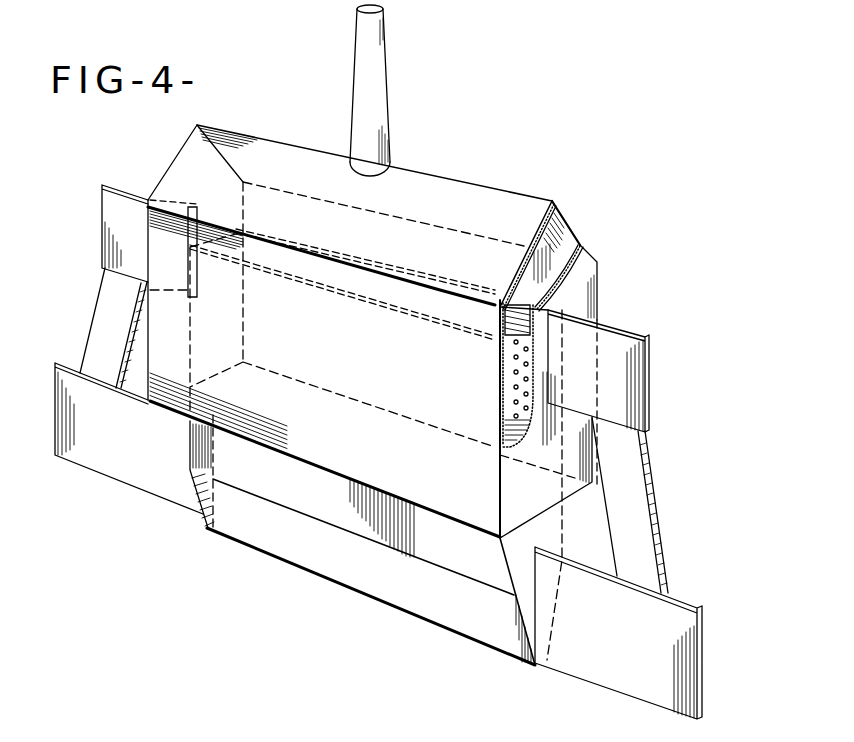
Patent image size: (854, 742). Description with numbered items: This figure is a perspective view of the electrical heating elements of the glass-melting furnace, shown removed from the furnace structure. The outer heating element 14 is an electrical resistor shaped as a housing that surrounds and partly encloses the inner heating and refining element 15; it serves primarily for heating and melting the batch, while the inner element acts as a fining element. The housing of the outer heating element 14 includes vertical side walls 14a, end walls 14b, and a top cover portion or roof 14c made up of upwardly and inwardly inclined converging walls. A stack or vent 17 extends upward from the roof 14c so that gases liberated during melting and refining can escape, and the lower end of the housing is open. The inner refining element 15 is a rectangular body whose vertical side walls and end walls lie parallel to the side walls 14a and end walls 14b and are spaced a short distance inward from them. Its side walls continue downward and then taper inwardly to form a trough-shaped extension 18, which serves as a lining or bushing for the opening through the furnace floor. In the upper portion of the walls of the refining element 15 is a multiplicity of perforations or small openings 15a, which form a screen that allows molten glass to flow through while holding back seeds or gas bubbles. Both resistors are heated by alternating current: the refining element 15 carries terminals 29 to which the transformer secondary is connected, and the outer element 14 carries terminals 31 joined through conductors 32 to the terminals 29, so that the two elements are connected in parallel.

The outer heating element 14 is at (398, 369).
The vertical side walls 14a is at (347, 461).
The end walls 14b is at (566, 484).
The top cover portion or roof 14c is at (487, 190).
The inner heating and refining element 15 is at (457, 560).
The perforations or small openings 15a is at (500, 385).
The stack or vent 17 is at (380, 122).
The trough-shaped extension 18 is at (483, 637).
The terminals 29 is at (103, 461).
The terminals 31 is at (110, 207).
The conductors 32 is at (105, 300).